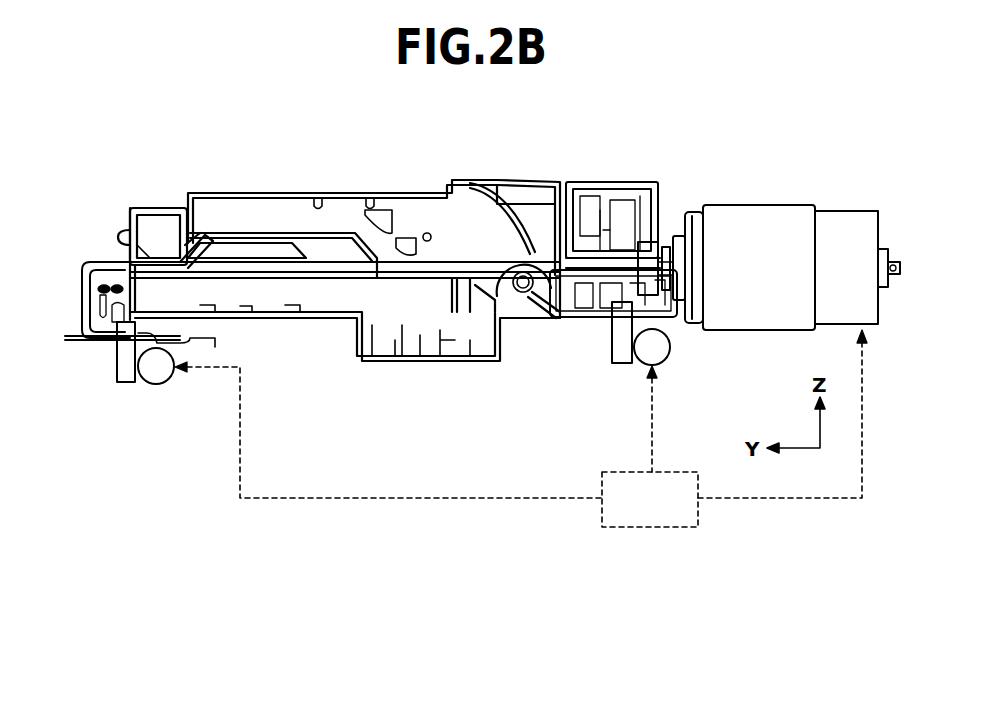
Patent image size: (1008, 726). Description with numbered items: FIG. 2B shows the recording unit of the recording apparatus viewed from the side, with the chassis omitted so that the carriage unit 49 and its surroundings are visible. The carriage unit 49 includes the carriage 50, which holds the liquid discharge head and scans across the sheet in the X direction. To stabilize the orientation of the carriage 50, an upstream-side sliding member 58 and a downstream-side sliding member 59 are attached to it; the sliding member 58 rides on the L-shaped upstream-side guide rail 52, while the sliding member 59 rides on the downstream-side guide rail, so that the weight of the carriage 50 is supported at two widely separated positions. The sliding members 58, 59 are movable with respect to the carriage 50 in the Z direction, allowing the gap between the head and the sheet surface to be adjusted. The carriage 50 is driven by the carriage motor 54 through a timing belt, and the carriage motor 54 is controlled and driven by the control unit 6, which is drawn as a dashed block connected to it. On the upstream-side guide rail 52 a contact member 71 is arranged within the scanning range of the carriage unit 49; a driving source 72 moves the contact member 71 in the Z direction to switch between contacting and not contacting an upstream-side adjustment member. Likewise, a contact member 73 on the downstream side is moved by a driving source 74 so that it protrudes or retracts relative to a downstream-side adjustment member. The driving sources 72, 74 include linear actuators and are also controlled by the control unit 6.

The carriage unit 49 is at (637, 155).
The carriage 50 is at (306, 258).
The upstream-side guide rail 52 is at (592, 305).
The carriage motor 54 is at (758, 222).
The upstream-side sliding member 58 is at (572, 302).
The downstream-side sliding member 59 is at (103, 290).
The control unit 6 is at (652, 527).
The contact member 71 is at (625, 363).
The driving source 72 is at (670, 351).
The contact member 73 is at (126, 382).
The driving source 74 is at (158, 385).